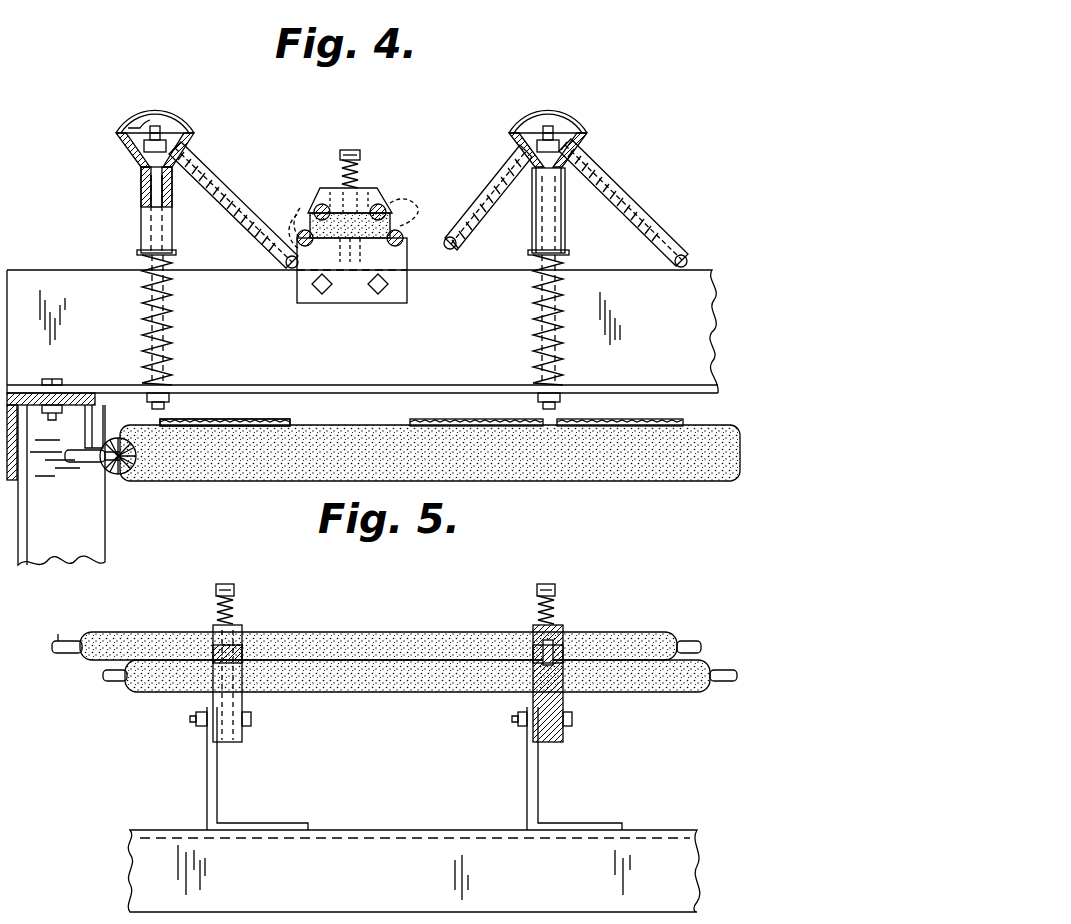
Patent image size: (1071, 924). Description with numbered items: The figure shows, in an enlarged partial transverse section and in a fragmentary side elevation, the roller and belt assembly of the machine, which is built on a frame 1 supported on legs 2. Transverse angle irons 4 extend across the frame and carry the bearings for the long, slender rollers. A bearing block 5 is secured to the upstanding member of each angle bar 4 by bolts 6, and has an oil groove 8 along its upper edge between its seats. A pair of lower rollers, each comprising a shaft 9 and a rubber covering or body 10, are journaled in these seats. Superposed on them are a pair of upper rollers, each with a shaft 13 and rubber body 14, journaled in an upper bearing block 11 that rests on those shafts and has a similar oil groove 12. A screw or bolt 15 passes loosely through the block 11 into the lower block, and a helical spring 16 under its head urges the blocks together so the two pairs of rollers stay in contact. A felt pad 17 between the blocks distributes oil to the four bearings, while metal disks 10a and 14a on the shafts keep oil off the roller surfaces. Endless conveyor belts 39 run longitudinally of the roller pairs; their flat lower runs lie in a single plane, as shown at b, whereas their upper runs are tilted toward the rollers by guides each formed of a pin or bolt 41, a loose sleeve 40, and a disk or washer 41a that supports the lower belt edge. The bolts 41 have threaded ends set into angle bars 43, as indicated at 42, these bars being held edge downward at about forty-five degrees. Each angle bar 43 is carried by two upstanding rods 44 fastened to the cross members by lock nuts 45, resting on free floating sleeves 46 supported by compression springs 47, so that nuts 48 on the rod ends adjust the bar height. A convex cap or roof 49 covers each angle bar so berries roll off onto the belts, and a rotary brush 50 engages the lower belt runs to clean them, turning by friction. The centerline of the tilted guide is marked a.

In FIG. 5, the frame 1 is at (415, 845).
In FIG. 4, the legs 2 is at (104, 528).
In FIG. 4, the angle irons 4 is at (48, 283).
In FIG. 5, the angle irons 4 is at (208, 786).
In FIG. 4, the bearing block 5 is at (310, 302).
In FIG. 5, the bearing block 5 is at (240, 738).
In FIG. 4, the bolts 6 is at (372, 290).
In FIG. 5, the bolts 6 is at (196, 724).
In FIG. 4, the oil groove 8 is at (341, 258).
In FIG. 5, the oil groove 8 is at (565, 694).
In FIG. 4, the shaft 9 is at (300, 246).
In FIG. 5, the shaft 9 is at (112, 682).
In FIG. 4, the rubber covering or body 10 is at (303, 236).
In FIG. 5, the rubber covering or body 10 is at (440, 692).
In FIG. 5, the metal disks 10a is at (262, 692).
In FIG. 4, the upper bearing block 11 is at (370, 192).
In FIG. 5, the upper bearing block 11 is at (215, 628).
In FIG. 5, the oil groove 12 is at (566, 636).
In FIG. 4, the shaft 13 is at (322, 204).
In FIG. 5, the shaft 13 is at (60, 642).
In FIG. 4, the rubber covering or body 14 is at (310, 206).
In FIG. 5, the rubber covering or body 14 is at (350, 634).
In FIG. 5, the metal disks 14a is at (248, 640).
In FIG. 4, the screw or bolt 15 is at (349, 150).
In FIG. 5, the screw or bolt 15 is at (225, 583).
In FIG. 4, the helical spring 16 is at (360, 166).
In FIG. 5, the helical spring 16 is at (236, 606).
In FIG. 4, the felt pad 17 is at (380, 200).
In FIG. 5, the felt pad 17 is at (214, 660).
In FIG. 4, the endless conveyor belts 39 is at (208, 178).
In FIG. 4, the tube or sleeve 40 is at (236, 213).
In FIG. 4, the pins or bolts 41 is at (282, 262).
In FIG. 4, the disk or washer 41a is at (452, 252).
In FIG. 4, the screw threaded ends 42 is at (160, 138).
In FIG. 4, the angle bars 43 is at (128, 152).
In FIG. 4, the upstanding rods 44 is at (143, 192).
In FIG. 4, the lock nuts 45 is at (165, 382).
In FIG. 4, the free floating sleeves 46 is at (150, 212).
In FIG. 4, the compression springs 47 is at (172, 340).
In FIG. 4, the nuts 48 is at (122, 132).
In FIG. 4, the convex cap or roof 49 is at (128, 118).
In FIG. 4, the rotary brush 50 is at (232, 466).
In FIG. 4, the center line a is at (232, 200).
In FIG. 4, the lower runs of the belts b is at (275, 420).